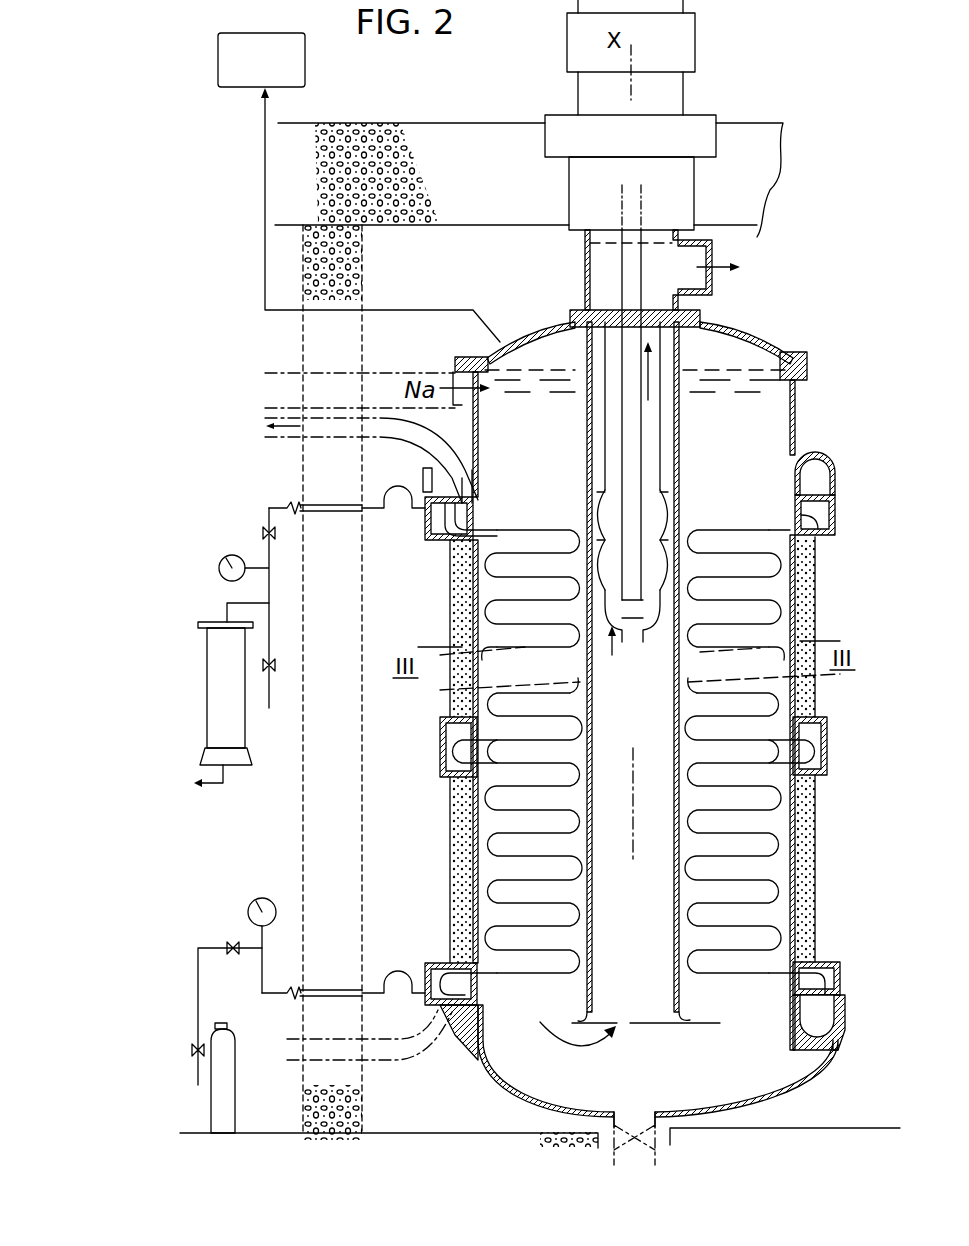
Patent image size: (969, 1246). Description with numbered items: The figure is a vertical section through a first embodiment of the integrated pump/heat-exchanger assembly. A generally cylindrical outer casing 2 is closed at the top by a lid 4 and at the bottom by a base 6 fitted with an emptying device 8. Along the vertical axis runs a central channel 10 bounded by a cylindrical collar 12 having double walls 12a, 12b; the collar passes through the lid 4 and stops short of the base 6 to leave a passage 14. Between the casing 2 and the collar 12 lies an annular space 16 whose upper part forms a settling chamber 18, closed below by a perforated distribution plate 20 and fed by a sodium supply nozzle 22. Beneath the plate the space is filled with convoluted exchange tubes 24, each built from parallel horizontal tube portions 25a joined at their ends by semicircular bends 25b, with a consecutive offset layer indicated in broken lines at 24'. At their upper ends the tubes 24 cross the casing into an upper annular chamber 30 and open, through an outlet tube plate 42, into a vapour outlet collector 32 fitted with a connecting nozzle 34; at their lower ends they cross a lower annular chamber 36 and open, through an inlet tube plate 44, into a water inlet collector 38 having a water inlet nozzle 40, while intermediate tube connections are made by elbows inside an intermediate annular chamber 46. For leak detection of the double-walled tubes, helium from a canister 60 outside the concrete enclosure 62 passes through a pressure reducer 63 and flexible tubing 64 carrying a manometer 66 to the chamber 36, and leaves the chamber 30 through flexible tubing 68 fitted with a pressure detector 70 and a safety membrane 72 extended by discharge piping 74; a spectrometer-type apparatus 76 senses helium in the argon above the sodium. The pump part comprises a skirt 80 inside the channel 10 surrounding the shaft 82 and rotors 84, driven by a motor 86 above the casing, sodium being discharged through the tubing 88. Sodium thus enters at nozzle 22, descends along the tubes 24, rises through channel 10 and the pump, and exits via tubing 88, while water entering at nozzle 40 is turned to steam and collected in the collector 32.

The outer casing 2 is at (806, 600).
The lid 4 is at (760, 345).
The base 6 is at (764, 1117).
The emptying device 8 is at (636, 1112).
The central channel 10 is at (620, 752).
The cylindrical collar 12 is at (596, 703).
The wall of collar 12a is at (693, 1015).
The wall of collar 12b is at (688, 1006).
The passage 14 is at (678, 1071).
The annular space 16 is at (721, 466).
The settling chamber 18 is at (770, 386).
The distribution plate 20 is at (757, 497).
The supply nozzle 22 is at (462, 367).
The exchange tubes 24 is at (483, 825).
The section of offset tubes 24' is at (591, 825).
The horizontal tube portions 25a is at (495, 557).
The semicircular bent tubes 25b is at (470, 600).
The upper annular chamber 30 is at (425, 535).
The annular outlet collector for vapour 32 is at (480, 470).
The connecting nozzle 34 is at (420, 480).
The lower annular chamber 36 is at (432, 965).
The annular inlet collector for water 38 is at (466, 1048).
The water inlet nozzle 40 is at (428, 1048).
The outlet tube plate 42 is at (482, 508).
The inlet tube plate 44 is at (470, 1019).
The intermediate annular chamber 46 is at (440, 754).
The canister of compressed helium 60 is at (235, 1101).
The concreted enclosure 62 is at (355, 250).
The pressure reducer 63 is at (228, 1032).
The flexible tubing 64 is at (383, 975).
The manometer 66 is at (257, 905).
The flexible tubing 68 is at (280, 505).
The maximum and minimum pressure detector 70 is at (231, 555).
The safety membrane 72 is at (243, 638).
The discharge piping 74 is at (240, 733).
The apparatus 76 is at (359, 187).
The skirt 80 is at (662, 436).
The shaft 82 is at (592, 283).
The rotor 84 is at (668, 656).
The motor 86 is at (688, 58).
The tubing 88 is at (702, 283).